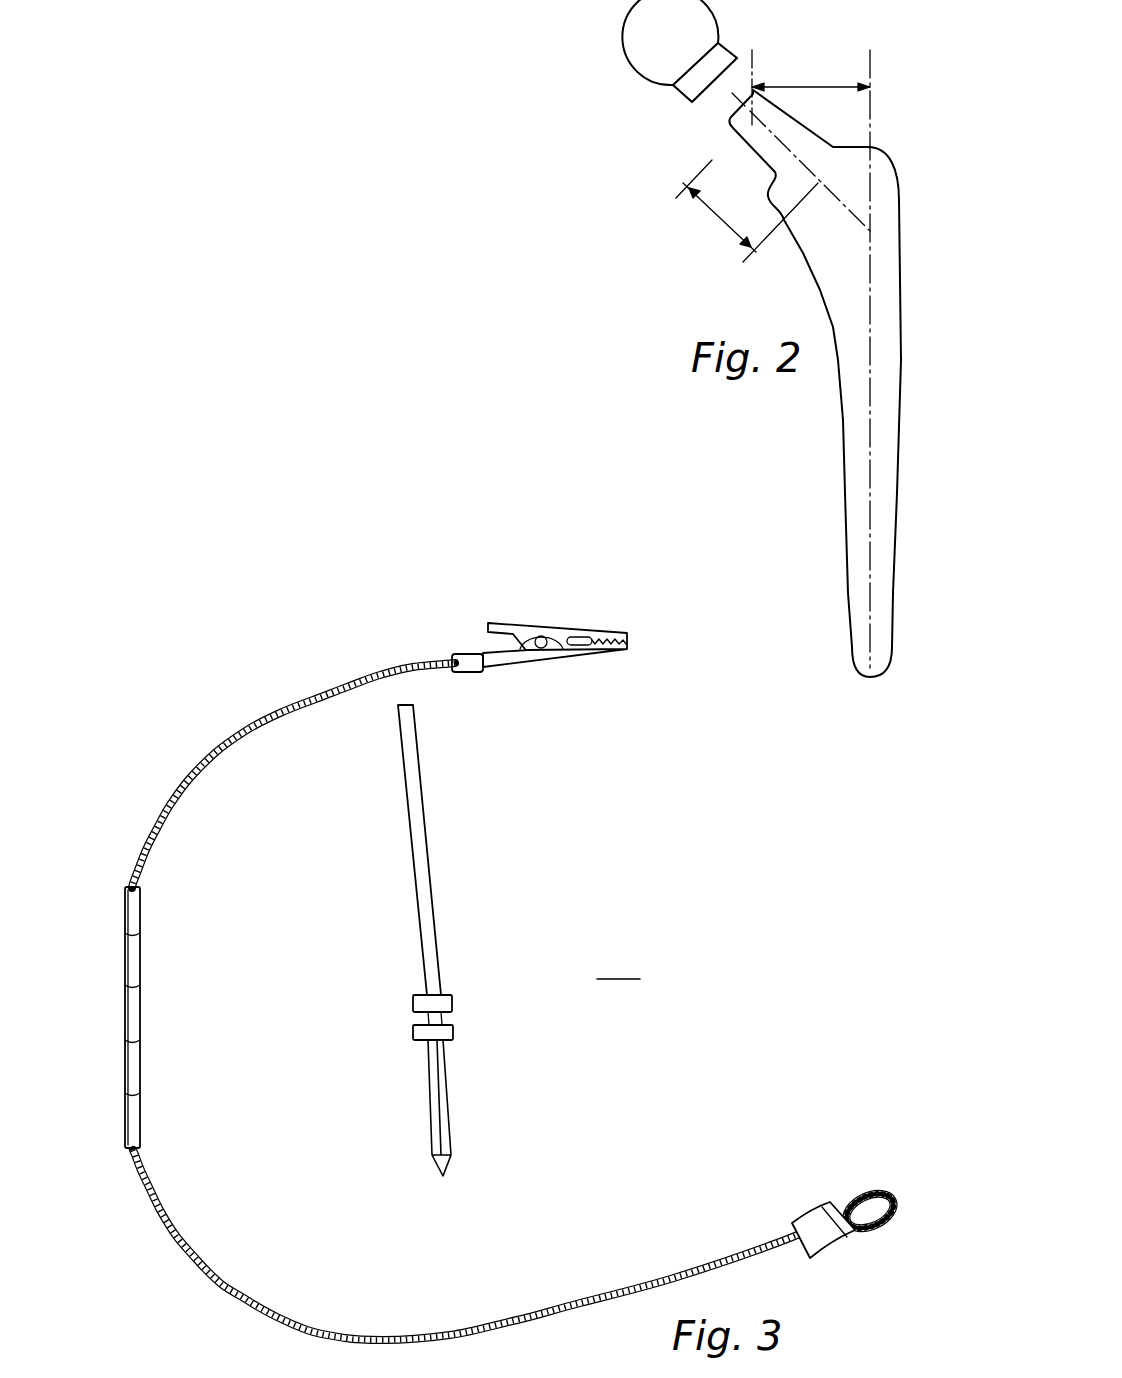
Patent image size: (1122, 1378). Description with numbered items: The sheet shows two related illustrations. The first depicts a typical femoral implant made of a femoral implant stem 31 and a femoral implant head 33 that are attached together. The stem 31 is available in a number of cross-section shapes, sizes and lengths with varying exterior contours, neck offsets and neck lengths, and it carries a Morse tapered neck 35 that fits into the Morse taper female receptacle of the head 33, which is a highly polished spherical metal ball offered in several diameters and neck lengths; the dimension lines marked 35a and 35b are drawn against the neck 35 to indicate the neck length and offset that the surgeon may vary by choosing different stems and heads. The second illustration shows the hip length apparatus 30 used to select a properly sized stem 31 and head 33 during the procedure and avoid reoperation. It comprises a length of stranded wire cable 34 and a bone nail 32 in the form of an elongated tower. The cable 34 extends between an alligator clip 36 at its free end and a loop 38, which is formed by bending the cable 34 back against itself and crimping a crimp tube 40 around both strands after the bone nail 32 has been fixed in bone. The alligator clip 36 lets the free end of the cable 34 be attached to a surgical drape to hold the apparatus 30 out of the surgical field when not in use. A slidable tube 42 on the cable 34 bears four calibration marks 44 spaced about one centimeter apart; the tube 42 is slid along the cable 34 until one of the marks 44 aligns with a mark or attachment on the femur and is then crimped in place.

In FIG. 3, the hip length apparatus 30 is at (618, 963).
In FIG. 2, the femoral implant stem 31 is at (845, 503).
In FIG. 3, the bone nail 32 is at (430, 1087).
In FIG. 2, the femoral implant head 33 is at (637, 68).
In FIG. 3, the stranded wire cable 34 is at (630, 1283).
In FIG. 2, the Morse tapered neck 35 is at (727, 121).
In FIG. 3, the Morse tapered neck 35 is at (424, 833).
In FIG. 2, the neck width 35a is at (720, 216).
In FIG. 2, the neck offset 35b is at (803, 88).
In FIG. 3, the alligator clip 36 is at (497, 622).
In FIG. 3, the loop 38 is at (835, 1202).
In FIG. 3, the crimp tube 40 is at (800, 1223).
In FIG. 3, the slidable tube 42 is at (122, 898).
In FIG. 3, the calibration marks 44 is at (127, 1097).